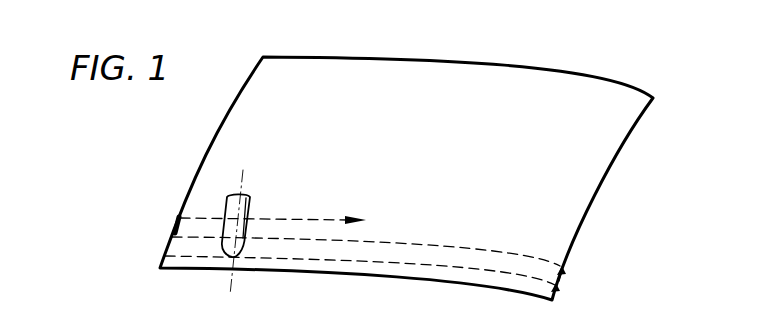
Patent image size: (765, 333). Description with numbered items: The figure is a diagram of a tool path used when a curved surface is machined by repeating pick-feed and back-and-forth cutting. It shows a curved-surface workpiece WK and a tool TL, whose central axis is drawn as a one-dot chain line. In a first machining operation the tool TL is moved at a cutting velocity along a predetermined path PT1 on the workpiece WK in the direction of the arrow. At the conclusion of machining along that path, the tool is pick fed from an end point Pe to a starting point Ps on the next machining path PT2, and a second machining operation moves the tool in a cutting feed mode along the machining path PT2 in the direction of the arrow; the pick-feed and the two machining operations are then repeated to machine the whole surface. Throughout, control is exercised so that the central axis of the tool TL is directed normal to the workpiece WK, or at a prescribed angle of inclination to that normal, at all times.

The workpiece WK is at (622, 80).
The tool TL is at (225, 205).
The predetermined path PT1 is at (333, 257).
The next machining path PT2 is at (511, 252).
The starting point Ps is at (573, 270).
The end point Pe is at (569, 293).